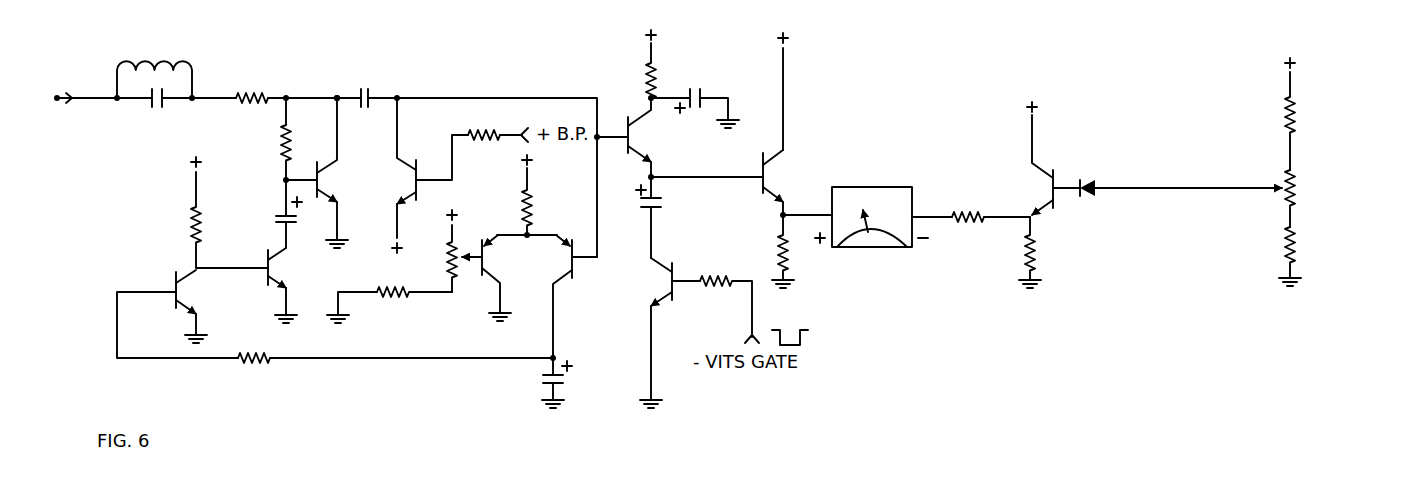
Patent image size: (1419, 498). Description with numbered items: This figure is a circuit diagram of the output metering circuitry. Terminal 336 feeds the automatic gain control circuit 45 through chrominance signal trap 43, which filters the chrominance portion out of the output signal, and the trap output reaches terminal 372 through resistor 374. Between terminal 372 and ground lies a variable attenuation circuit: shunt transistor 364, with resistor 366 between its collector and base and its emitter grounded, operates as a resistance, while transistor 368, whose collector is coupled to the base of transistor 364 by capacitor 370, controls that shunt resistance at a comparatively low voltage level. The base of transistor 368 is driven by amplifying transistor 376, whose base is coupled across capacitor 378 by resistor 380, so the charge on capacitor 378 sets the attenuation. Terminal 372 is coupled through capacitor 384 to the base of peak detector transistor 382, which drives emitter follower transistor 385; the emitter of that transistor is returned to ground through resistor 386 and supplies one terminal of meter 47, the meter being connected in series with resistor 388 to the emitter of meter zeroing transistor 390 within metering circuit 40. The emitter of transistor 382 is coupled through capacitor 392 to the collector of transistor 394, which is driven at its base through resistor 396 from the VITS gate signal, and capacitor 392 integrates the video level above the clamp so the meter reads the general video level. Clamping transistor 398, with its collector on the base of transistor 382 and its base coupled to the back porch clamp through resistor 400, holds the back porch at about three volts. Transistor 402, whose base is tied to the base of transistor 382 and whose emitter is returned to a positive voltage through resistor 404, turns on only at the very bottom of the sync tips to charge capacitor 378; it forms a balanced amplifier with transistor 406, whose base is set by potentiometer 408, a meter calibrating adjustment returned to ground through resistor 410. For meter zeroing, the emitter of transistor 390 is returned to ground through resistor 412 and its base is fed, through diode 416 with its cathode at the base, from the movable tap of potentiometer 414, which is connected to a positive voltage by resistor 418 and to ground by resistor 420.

The terminal 336 is at (55, 103).
The chrominance signal trap 43 is at (80, 59).
The resistor 374 is at (253, 92).
The terminal 372 is at (336, 95).
The capacitor 384 is at (365, 87).
The resistor 366 is at (281, 140).
The shunt transistor 364 is at (326, 181).
The capacitor 370 is at (275, 216).
The automatic gain control circuit 45 is at (250, 236).
The second transistor 368 is at (280, 271).
The amplifying transistor 376 is at (186, 294).
The resistor 380 is at (253, 364).
The capacitor 378 is at (540, 378).
The resistor 410 is at (392, 297).
The potentiometer 408 is at (447, 262).
The resistor 404 is at (532, 209).
The transistor 406 is at (492, 262).
The transistor 402 is at (562, 262).
The resistor 400 is at (480, 143).
The clamping transistor 398 is at (408, 186).
The peak detector transistor 382 is at (635, 112).
The capacitor 392 is at (664, 203).
The emitter follower transistor 385 is at (756, 166).
The resistor 386 is at (776, 252).
The transistor 394 is at (664, 281).
The resistor 396 is at (716, 298).
The meter 47 is at (877, 186).
The metering circuit 40 is at (988, 174).
The resistor 388 is at (964, 226).
The meter zeroing emitter follower transistor 390 is at (1046, 190).
The resistor 412 is at (1040, 253).
The diode 416 is at (1092, 180).
The resistor 418 is at (1283, 115).
The potentiometer 414 is at (1283, 196).
The resistor 420 is at (1283, 250).